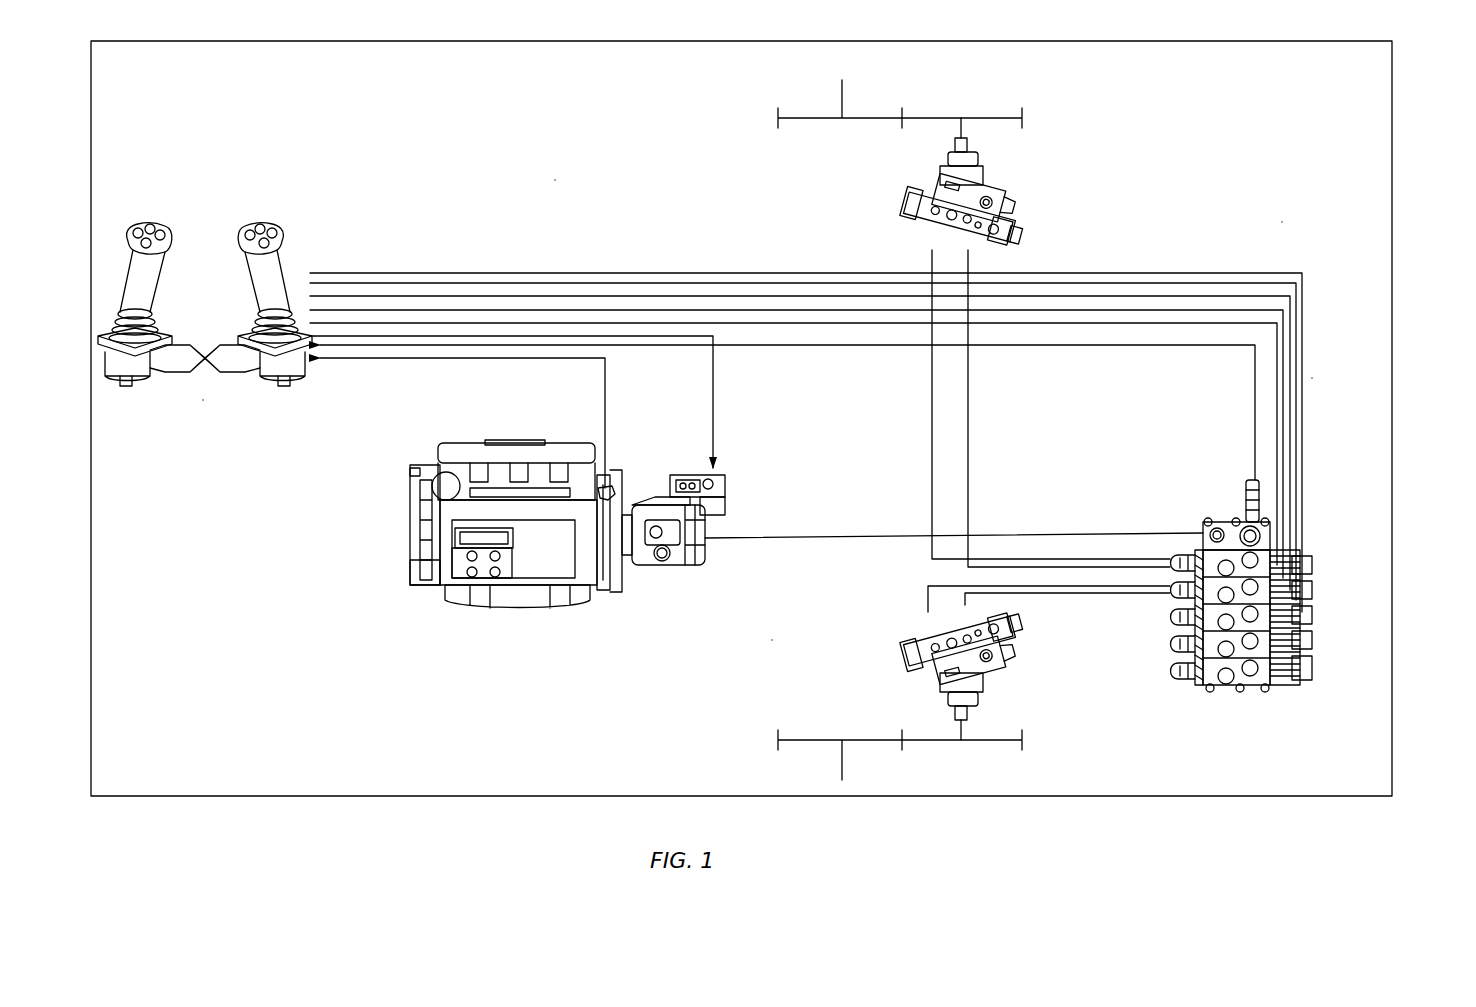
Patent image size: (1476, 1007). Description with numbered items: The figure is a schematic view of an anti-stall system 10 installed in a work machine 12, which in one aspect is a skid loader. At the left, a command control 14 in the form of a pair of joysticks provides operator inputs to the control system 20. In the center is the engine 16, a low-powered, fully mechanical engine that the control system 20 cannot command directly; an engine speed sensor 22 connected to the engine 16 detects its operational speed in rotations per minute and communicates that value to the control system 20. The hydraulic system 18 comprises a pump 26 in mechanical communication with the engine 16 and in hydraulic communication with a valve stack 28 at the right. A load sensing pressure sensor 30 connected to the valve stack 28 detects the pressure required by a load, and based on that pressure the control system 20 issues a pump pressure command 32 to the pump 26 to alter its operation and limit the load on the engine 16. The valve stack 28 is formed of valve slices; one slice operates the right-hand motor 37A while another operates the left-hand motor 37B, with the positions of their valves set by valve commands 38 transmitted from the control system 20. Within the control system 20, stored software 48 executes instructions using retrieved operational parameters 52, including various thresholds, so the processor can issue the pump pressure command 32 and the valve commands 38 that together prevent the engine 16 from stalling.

The anti-stall system 10 is at (555, 180).
The work machine 12 is at (1400, 101).
The command control 14 is at (222, 222).
The engine 16 is at (500, 620).
The hydraulic system 18 is at (772, 640).
The control system 20 is at (203, 400).
The engine speed sensor 22 is at (612, 490).
The pump 26 is at (655, 575).
The valve stack 28 is at (1320, 562).
The load sensing pressure sensor 30 is at (1245, 496).
The pump pressure command 32 is at (728, 410).
The right-hand motor 37A is at (990, 178).
The left-hand motor 37B is at (1010, 684).
The valve commands 38 is at (1312, 378).
The software 48 is at (1282, 222).
The operational parameters 52 is at (418, 360).